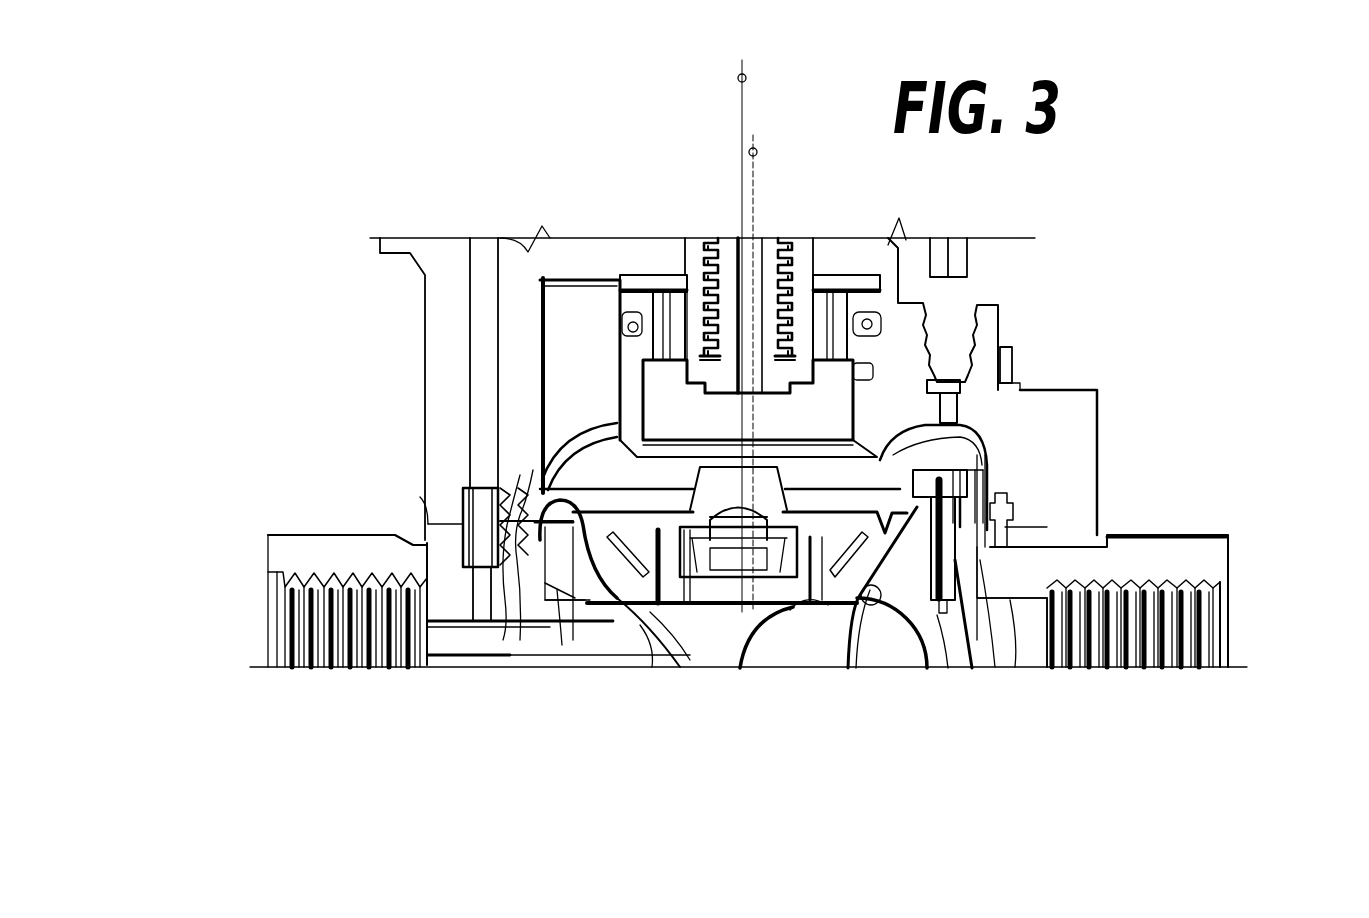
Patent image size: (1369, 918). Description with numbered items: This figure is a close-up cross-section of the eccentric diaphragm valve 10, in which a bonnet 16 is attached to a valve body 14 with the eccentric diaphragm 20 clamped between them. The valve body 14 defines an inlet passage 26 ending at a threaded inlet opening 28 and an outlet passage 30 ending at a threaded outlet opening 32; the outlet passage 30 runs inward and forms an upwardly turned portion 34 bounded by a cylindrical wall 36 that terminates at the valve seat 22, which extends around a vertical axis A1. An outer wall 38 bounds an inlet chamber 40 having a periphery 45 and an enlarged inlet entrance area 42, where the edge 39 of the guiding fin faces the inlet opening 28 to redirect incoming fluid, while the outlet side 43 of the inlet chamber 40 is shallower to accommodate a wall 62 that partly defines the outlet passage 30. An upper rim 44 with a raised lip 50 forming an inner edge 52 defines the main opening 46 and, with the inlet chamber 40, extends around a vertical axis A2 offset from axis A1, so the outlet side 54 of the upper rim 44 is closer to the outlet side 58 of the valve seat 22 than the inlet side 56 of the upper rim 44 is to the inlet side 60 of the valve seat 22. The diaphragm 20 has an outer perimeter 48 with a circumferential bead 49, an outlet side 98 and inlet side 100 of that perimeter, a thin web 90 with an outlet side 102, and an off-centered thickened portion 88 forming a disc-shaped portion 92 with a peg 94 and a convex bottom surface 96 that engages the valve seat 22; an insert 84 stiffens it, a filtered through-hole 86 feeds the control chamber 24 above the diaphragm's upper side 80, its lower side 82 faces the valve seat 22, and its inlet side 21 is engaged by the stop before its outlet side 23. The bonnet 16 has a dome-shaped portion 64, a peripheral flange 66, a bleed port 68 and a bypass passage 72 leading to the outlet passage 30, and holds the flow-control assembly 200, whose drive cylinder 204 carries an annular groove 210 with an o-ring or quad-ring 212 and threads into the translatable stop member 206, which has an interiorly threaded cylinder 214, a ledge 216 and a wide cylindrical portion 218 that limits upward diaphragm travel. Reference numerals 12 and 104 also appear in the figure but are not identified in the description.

The eccentric diaphragm valve 10 is at (1144, 298).
The valve body assembly 12 is at (1155, 320).
The valve body 14 is at (1030, 640).
The bonnet 16 is at (730, 256).
The eccentric diaphragm 20 is at (828, 544).
The inlet side of the diaphragm 21 is at (875, 557).
The diaphragm valve seat 22 is at (897, 640).
The outlet side of the diaphragm 23 is at (600, 574).
The internal control chamber 24 is at (540, 368).
The inlet passage 26 is at (993, 640).
The inlet opening 28 is at (1230, 552).
The outlet passage 30 is at (458, 643).
The outlet opening 32 is at (268, 540).
The upwardly turned portion 34 is at (775, 655).
The cylindrical wall 36 is at (855, 640).
The outer wall 38 is at (957, 640).
The edge 39 is at (950, 640).
The inlet chamber 40 is at (897, 587).
The inlet entrance area 42 is at (965, 560).
The outlet side of the inlet chamber 43 is at (520, 640).
The upper rim 44 is at (962, 440).
The periphery of the inlet chamber 45 is at (1105, 552).
The main opening 46 is at (543, 467).
The outer perimeter of the diaphragm 48 is at (1008, 512).
The circumferential bead 49 is at (993, 482).
The raised lip 50 is at (503, 640).
The inner edge 52 is at (573, 640).
The outlet side of the upper rim 54 is at (548, 497).
The inlet side of the upper rim 56 is at (1008, 490).
The outlet side of the valve seat 58 is at (647, 647).
The inlet side of the valve seat 60 is at (840, 640).
The wall 62 is at (558, 645).
The dome-shaped portion 64 is at (600, 350).
The peripheral flange 66 is at (1040, 535).
The bleed port 68 is at (953, 413).
The bypass passage 72 is at (607, 455).
The upper side of the diaphragm 80 is at (807, 487).
The lower side of the diaphragm 82 is at (728, 606).
The insert 84 is at (690, 601).
The filtered through-hole 86 is at (913, 494).
The thickened portion 88 is at (628, 541).
The thin web 90 is at (573, 520).
The disc-shaped portion 92 is at (803, 520).
The peg 94 is at (835, 442).
The convex outer bottom surface 96 is at (680, 640).
The outlet side of the outer perimeter 98 is at (420, 497).
The inlet side of the outer perimeter 100 is at (1013, 527).
The outlet side of the web 102 is at (543, 465).
The port 104 is at (985, 455).
The flow-control assembly 200 is at (790, 270).
The drive cylinder 204 is at (808, 262).
The translatable stop member 206 is at (948, 330).
The annular groove 210 is at (690, 325).
The o-ring or quad-ring 212 is at (626, 328).
The interiorly threaded cylinder 214 is at (815, 285).
The ledge 216 is at (660, 187).
The cylindrical portion 218 is at (660, 418).
The vertical axis of the valve seat A1 is at (738, 77).
The vertical axis of the upper rim and inlet chamber A2 is at (758, 152).